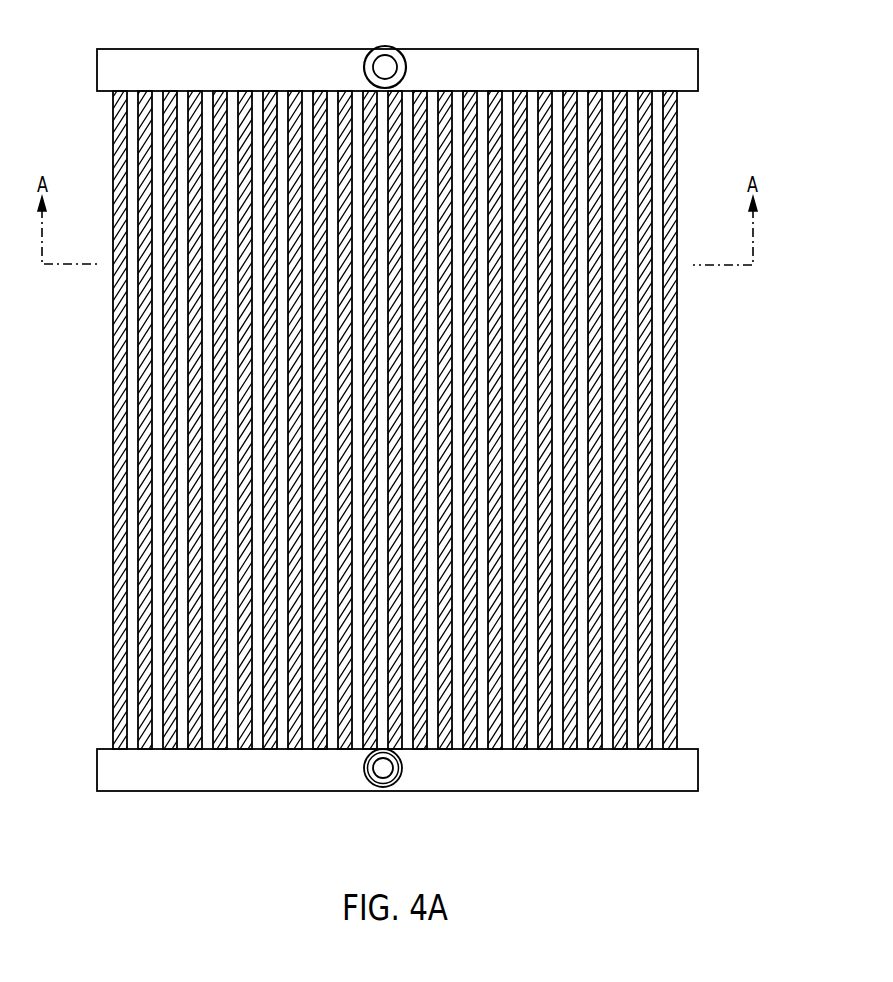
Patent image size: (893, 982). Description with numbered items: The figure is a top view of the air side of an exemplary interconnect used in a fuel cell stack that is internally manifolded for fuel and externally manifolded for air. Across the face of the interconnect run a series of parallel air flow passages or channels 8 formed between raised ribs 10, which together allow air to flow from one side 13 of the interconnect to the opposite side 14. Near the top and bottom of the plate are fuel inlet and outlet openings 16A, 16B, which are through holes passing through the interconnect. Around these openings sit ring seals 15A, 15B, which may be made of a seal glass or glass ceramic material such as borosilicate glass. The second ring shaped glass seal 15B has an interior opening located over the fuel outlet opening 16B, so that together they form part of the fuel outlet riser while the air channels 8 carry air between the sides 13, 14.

The air flow passages 8 is at (235, 332).
The ribs 10 is at (355, 550).
The one side 13 is at (698, 772).
The opposite side 14 is at (698, 70).
The ring seal 15A is at (370, 52).
The second ring shaped glass seal 15B is at (365, 775).
The fuel inlet opening 16A is at (386, 66).
The fuel outlet opening 16B is at (383, 768).